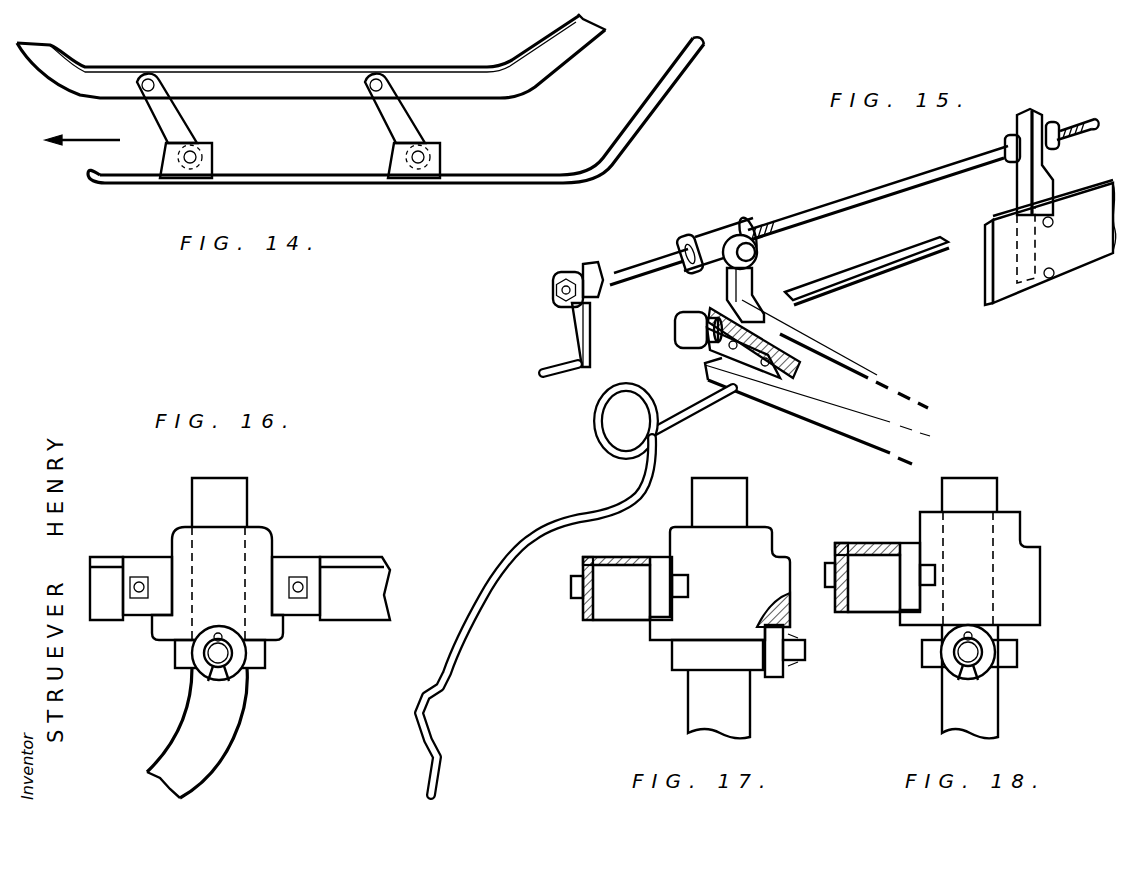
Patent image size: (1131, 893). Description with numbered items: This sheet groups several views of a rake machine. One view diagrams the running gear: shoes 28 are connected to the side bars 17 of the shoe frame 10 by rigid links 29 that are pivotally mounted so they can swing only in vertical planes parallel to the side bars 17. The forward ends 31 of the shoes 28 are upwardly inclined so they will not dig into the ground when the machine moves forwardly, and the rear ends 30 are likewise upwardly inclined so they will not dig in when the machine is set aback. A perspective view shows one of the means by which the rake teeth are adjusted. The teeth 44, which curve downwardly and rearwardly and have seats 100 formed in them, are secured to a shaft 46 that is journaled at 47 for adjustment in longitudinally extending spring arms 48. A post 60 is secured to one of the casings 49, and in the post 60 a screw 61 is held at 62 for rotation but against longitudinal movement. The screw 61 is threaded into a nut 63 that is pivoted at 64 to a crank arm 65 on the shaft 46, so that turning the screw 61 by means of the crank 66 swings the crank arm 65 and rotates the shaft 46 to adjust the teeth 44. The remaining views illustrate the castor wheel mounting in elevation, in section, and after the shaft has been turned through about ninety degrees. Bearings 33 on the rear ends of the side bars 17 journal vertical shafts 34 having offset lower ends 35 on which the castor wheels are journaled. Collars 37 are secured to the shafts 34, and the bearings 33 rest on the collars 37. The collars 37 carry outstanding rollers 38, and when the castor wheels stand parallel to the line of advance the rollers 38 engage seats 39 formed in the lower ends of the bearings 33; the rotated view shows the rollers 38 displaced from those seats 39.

In FIG. 14, the shoe frame 10 is at (598, 26).
In FIG. 14, the side bars 17 is at (271, 82).
In FIG. 16, the side bars 17 is at (112, 546).
In FIG. 17, the side bars 17 is at (578, 614).
In FIG. 18, the side bars 17 is at (841, 615).
In FIG. 14, the shoes 28 is at (312, 166).
In FIG. 14, the links 29 is at (185, 128).
In FIG. 14, the rear ends of the shoes 30 is at (94, 179).
In FIG. 14, the forward ends of the shoes 31 is at (632, 118).
In FIG. 16, the bearings 33 is at (260, 540).
In FIG. 17, the bearings 33 is at (762, 539).
In FIG. 18, the bearings 33 is at (1000, 540).
In FIG. 16, the vertical shafts 34 is at (238, 502).
In FIG. 17, the vertical shafts 34 is at (740, 492).
In FIG. 18, the vertical shafts 34 is at (988, 496).
In FIG. 16, the offset lower ends 35 is at (233, 727).
In FIG. 16, the collars 37 is at (266, 664).
In FIG. 17, the collars 37 is at (678, 660).
In FIG. 18, the collars 37 is at (926, 660).
In FIG. 16, the rollers 38 is at (200, 662).
In FIG. 17, the rollers 38 is at (781, 678).
In FIG. 18, the rollers 38 is at (992, 653).
In FIG. 16, the seats 39 is at (225, 626).
In FIG. 17, the seats 39 is at (790, 614).
In FIG. 15, the teeth 44 is at (537, 537).
In FIG. 15, the shaft 46 is at (835, 373).
In FIG. 15, the journal 47 is at (687, 320).
In FIG. 15, the spring arms 48 is at (916, 258).
In FIG. 15, the casings 49 is at (1068, 275).
In FIG. 15, the post 60 is at (1031, 114).
In FIG. 15, the screw 61 is at (767, 224).
In FIG. 15, the holding means 62 is at (1007, 141).
In FIG. 15, the nut 63 is at (718, 226).
In FIG. 15, the pivot 64 is at (754, 253).
In FIG. 15, the crank arm 65 is at (748, 284).
In FIG. 15, the crank 66 is at (572, 330).
In FIG. 15, the seats 100 is at (416, 718).